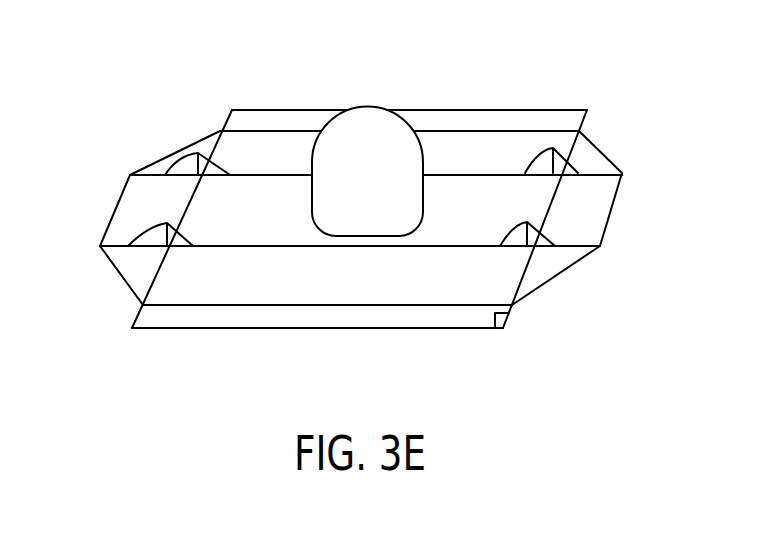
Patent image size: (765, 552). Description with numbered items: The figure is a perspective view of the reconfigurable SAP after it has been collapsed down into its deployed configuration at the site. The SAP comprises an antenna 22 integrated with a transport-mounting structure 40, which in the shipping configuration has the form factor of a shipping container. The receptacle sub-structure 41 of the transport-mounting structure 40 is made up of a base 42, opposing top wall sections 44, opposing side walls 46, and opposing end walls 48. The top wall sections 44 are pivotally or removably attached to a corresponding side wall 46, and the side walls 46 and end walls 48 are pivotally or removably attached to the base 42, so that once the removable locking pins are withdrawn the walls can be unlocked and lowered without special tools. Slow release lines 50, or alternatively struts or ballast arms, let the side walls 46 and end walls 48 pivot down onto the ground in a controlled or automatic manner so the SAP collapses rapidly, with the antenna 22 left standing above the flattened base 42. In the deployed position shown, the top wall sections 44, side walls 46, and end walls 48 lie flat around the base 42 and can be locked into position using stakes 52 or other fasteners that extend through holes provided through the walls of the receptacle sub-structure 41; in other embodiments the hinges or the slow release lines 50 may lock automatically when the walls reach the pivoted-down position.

The transport-mounting structure 40 is at (318, 92).
The antenna 22 is at (378, 100).
The receptacle sub-structure 41 is at (455, 110).
The base 42 is at (283, 237).
The top wall sections 44 is at (522, 110).
The side walls 46 is at (558, 137).
The end walls 48 is at (127, 213).
The slow release lines 50 is at (175, 150).
The stakes 52 is at (230, 108).